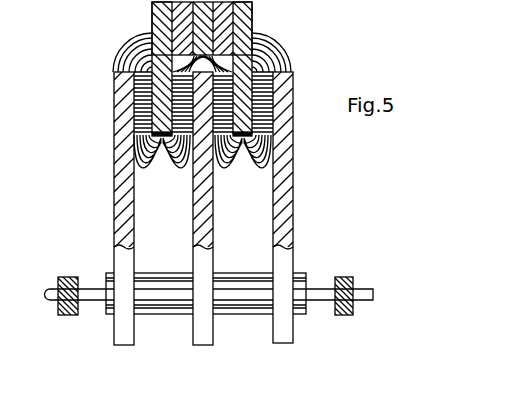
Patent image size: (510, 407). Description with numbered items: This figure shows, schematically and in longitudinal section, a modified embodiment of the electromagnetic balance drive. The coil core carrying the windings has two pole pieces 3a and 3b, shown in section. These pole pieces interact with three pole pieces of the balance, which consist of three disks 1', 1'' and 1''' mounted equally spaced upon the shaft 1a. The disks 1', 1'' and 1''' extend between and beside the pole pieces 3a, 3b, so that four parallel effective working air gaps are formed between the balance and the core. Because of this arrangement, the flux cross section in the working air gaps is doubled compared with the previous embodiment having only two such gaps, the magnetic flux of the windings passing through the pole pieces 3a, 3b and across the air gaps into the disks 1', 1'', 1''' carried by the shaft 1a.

The pole piece 3a is at (152, 25).
The pole piece 3b is at (243, 23).
The disk 1' is at (114, 202).
The disk 1'' is at (215, 202).
The disk 1''' is at (297, 201).
The shaft 1a is at (361, 290).